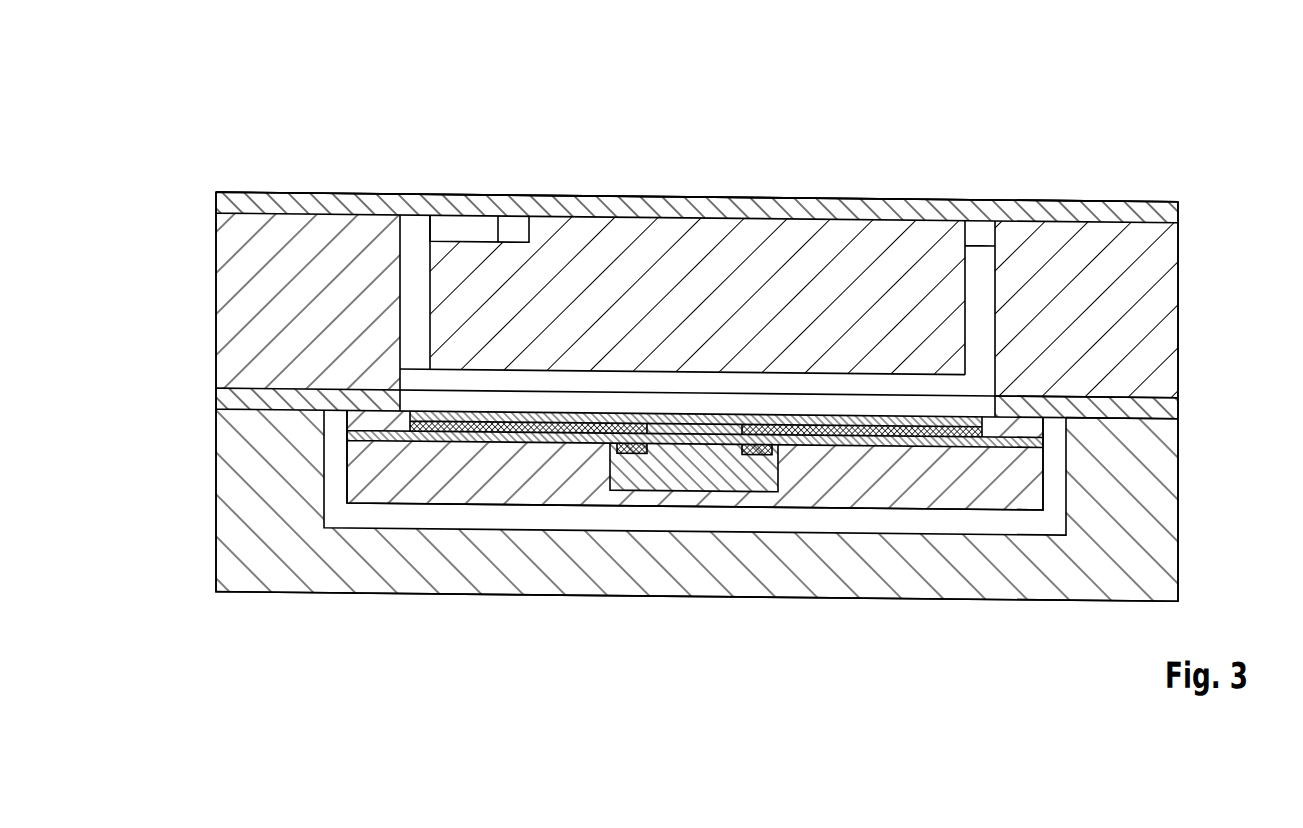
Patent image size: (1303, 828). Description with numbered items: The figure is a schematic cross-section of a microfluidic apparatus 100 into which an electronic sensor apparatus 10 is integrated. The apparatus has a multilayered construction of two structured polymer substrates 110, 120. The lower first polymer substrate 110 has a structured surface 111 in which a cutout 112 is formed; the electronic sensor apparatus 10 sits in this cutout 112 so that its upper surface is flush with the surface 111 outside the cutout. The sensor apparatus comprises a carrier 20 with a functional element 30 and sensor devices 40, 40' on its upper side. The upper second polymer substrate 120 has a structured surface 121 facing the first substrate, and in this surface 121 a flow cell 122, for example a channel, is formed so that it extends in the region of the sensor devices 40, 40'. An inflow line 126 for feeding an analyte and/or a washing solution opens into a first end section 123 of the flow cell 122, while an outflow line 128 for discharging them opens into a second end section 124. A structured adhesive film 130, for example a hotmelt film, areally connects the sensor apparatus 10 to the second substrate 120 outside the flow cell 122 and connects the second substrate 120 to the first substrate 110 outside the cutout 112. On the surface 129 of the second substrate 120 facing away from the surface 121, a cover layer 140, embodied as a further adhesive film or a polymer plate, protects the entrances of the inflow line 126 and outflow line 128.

The microfluidic apparatus 100 is at (213, 130).
The electronic sensor apparatus 10 is at (507, 503).
The carrier substrate of sensor element 20 is at (372, 490).
The functional element 30 is at (677, 467).
The sensor device 40 is at (528, 530).
The sensor device 40' is at (862, 532).
The first polymer substrate 110 is at (228, 496).
The structured surface 111 is at (1138, 405).
The cutout 112 is at (817, 516).
The second polymer substrate 120 is at (227, 307).
The structured surface 121 is at (1111, 392).
The flow cell 122 is at (686, 380).
The first end section 123 is at (410, 381).
The second end section 124 is at (982, 380).
The inflow line 126 is at (415, 262).
The outflow line 128 is at (978, 261).
The surface 129 is at (1134, 195).
The structured adhesive film 130 is at (227, 405).
The cover layer 140 is at (228, 207).